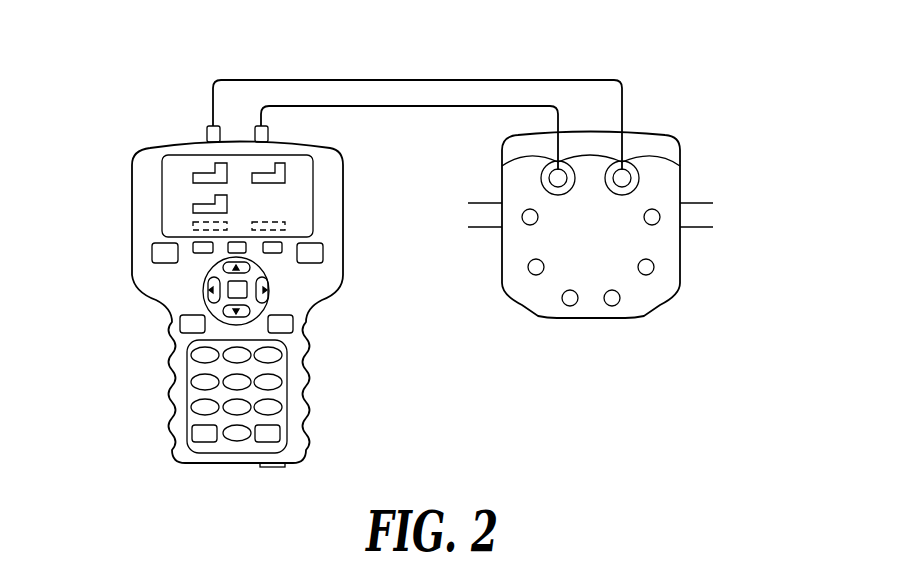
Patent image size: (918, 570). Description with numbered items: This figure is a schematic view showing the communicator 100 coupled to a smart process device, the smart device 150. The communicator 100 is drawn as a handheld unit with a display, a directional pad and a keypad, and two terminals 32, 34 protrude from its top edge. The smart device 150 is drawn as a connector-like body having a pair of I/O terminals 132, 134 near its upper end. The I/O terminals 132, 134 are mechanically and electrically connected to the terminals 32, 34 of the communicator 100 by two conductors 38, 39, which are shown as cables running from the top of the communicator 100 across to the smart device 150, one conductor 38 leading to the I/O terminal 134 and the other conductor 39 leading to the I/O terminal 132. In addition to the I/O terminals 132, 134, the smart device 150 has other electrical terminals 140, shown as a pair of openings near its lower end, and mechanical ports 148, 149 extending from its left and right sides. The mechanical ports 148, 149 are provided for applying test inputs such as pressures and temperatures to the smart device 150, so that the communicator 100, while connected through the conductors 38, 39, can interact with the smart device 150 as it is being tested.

The communicator 100 is at (138, 131).
The terminal 32 is at (207, 128).
The terminal 34 is at (268, 133).
The conductor 38 is at (452, 80).
The conductor 39 is at (416, 106).
The smart device 150 is at (670, 114).
The I/O terminal 132 is at (502, 168).
The I/O terminal 134 is at (682, 168).
The electrical terminals 140 is at (611, 306).
The mechanical port 148 is at (475, 213).
The mechanical port 149 is at (705, 212).